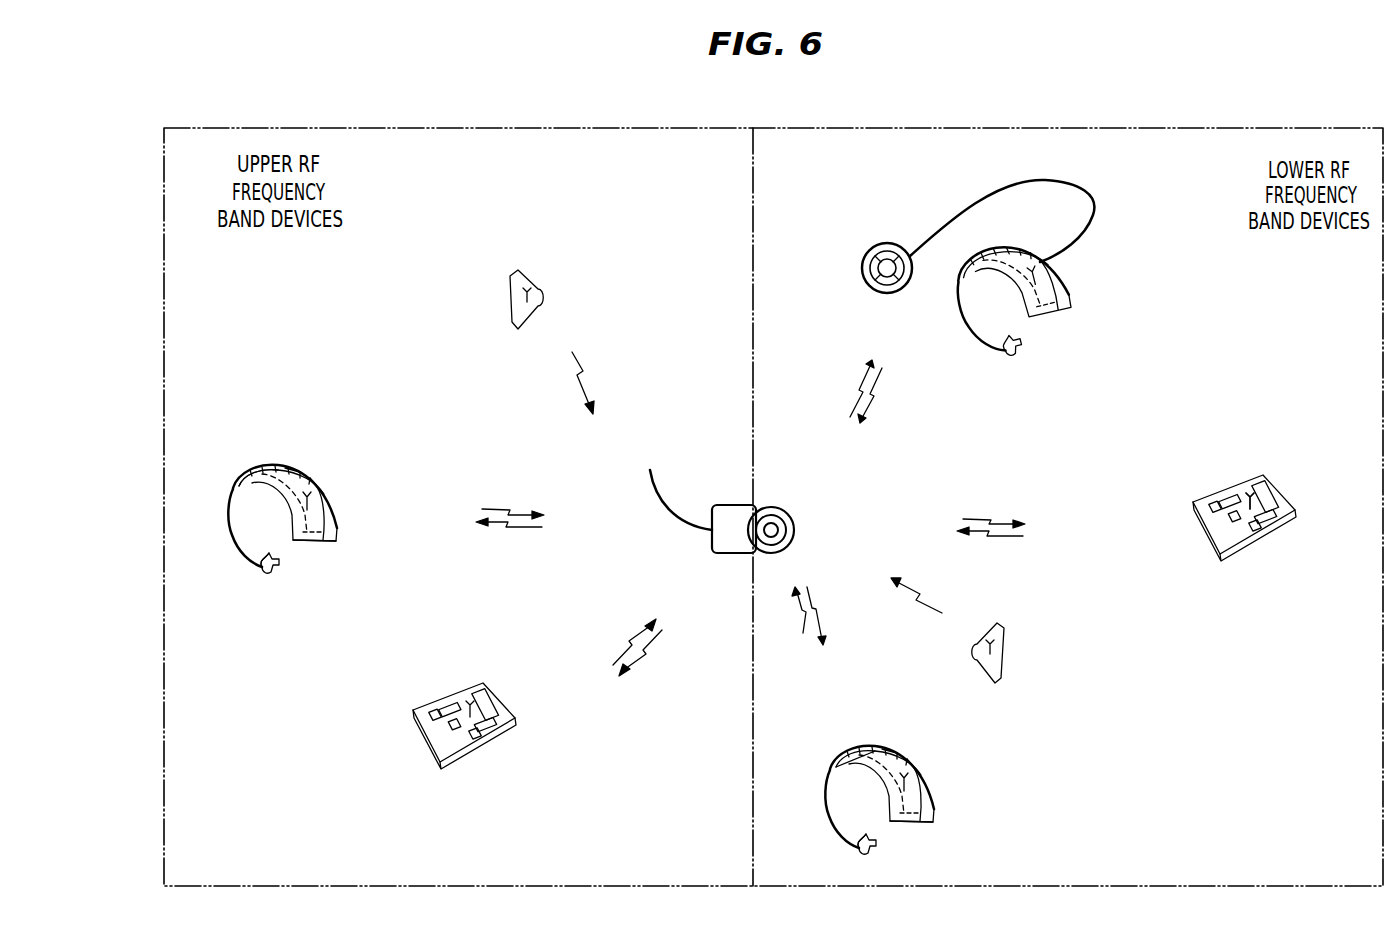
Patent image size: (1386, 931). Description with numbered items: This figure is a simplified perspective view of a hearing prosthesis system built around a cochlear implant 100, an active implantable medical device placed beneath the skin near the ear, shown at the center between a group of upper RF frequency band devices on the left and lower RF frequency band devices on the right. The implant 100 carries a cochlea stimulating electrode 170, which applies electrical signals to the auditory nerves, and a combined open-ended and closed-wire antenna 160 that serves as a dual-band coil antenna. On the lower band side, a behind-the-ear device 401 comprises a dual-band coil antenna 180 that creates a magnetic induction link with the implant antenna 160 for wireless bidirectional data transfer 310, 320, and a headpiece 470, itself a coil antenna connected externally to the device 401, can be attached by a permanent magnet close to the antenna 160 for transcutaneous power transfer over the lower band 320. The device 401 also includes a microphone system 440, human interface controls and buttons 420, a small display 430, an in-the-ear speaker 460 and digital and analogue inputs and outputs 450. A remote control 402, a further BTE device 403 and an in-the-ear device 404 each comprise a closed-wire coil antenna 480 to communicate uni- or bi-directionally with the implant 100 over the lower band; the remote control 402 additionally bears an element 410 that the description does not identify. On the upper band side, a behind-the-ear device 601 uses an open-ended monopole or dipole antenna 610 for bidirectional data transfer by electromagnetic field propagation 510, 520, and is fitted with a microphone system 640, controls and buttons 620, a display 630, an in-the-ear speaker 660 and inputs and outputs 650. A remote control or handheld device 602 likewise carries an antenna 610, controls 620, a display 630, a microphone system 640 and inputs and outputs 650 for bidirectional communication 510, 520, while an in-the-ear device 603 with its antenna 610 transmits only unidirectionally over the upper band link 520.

The cochlear implant 100 is at (729, 553).
The combined open-ended and closed-wire antenna 160 is at (788, 512).
The cochlea stimulating electrode 170 is at (664, 500).
The dual-band coil antenna 180 is at (1040, 283).
The wireless bidirectional data transfer 310 is at (875, 392).
The lower frequency band data transfer 320 is at (850, 395).
The behind-the-ear device 401 is at (962, 181).
The remote control 402 is at (1217, 544).
The BTE device 403 is at (996, 767).
The in-the-ear device 404 is at (1007, 672).
The antenna 410 is at (1245, 497).
The human interface controls and buttons 420 is at (889, 747).
The small display 430 is at (912, 765).
The microphone system 440 is at (859, 746).
The digital and analogue inputs and outputs 450 is at (930, 822).
The in-the-ear speaker 460 is at (860, 848).
The headpiece 470 is at (876, 247).
The closed-wire antenna 480 is at (907, 793).
The bidirectional data transfer 510 is at (525, 527).
The wireless communication in upper RF band 520 is at (585, 373).
The behind-the-ear device 601 is at (381, 411).
The remote control or handheld device 602 is at (437, 752).
The in-the-ear device 603 is at (510, 318).
The open-ended antenna 610 is at (310, 512).
The human interface controls and buttons 620 is at (292, 466).
The display 630 is at (315, 484).
The microphone system 640 is at (262, 465).
The digital and analog inputs and outputs 650 is at (333, 541).
The in-the-ear speaker 660 is at (263, 567).